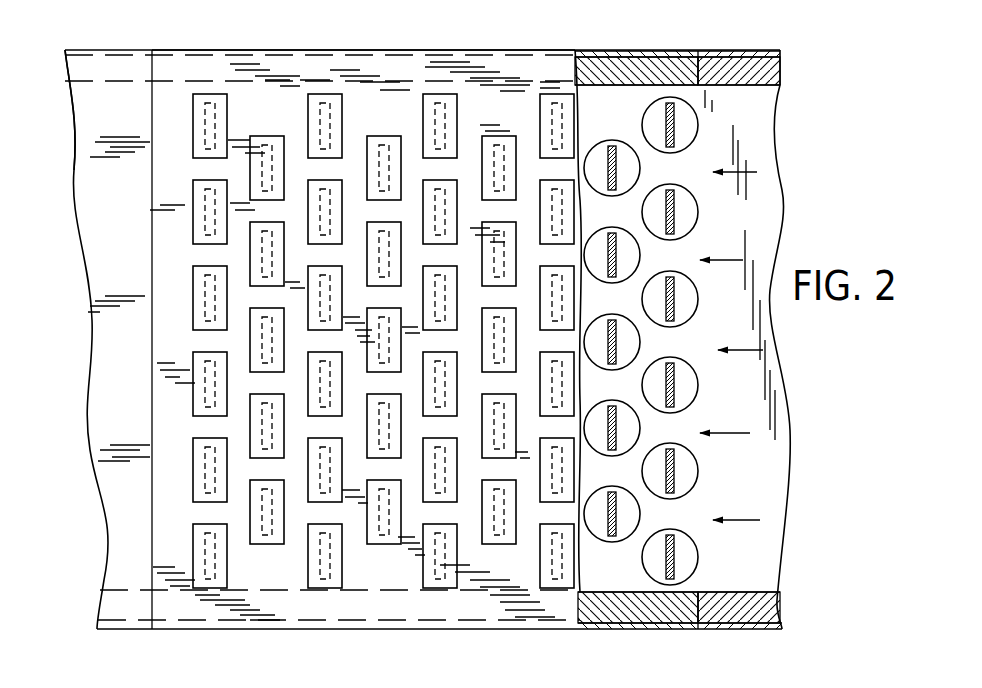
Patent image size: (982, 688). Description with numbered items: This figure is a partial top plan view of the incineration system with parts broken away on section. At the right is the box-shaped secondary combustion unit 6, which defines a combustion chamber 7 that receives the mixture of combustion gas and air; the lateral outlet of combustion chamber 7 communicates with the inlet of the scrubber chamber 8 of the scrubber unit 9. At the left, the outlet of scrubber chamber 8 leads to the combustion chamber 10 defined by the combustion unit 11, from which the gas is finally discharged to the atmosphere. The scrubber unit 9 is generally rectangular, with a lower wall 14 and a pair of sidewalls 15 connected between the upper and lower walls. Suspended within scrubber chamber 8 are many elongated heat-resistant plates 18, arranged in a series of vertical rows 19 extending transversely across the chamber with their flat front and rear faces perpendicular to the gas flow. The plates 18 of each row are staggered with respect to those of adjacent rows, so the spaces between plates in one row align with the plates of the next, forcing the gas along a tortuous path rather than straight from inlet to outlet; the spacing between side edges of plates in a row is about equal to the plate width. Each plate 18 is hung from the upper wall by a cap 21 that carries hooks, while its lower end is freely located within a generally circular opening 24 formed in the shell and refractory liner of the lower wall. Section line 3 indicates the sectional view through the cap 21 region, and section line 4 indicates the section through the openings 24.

The section line 3- 3 is at (180, 168).
The section line 4- 4 is at (730, 98).
The secondary combustion unit 6 is at (772, 52).
The combustion chamber 7 is at (768, 217).
The scrubber chamber 8 is at (638, 90).
The scrubber unit 9 is at (437, 47).
The combustion chamber 10 is at (118, 284).
The combustion unit 11 is at (110, 46).
The lower wall 14 is at (783, 411).
The sidewalls 15 is at (375, 50).
The plates 18 is at (616, 170).
The vertical rows 19 is at (615, 145).
The cap 21 is at (268, 136).
The openings 24 is at (689, 134).